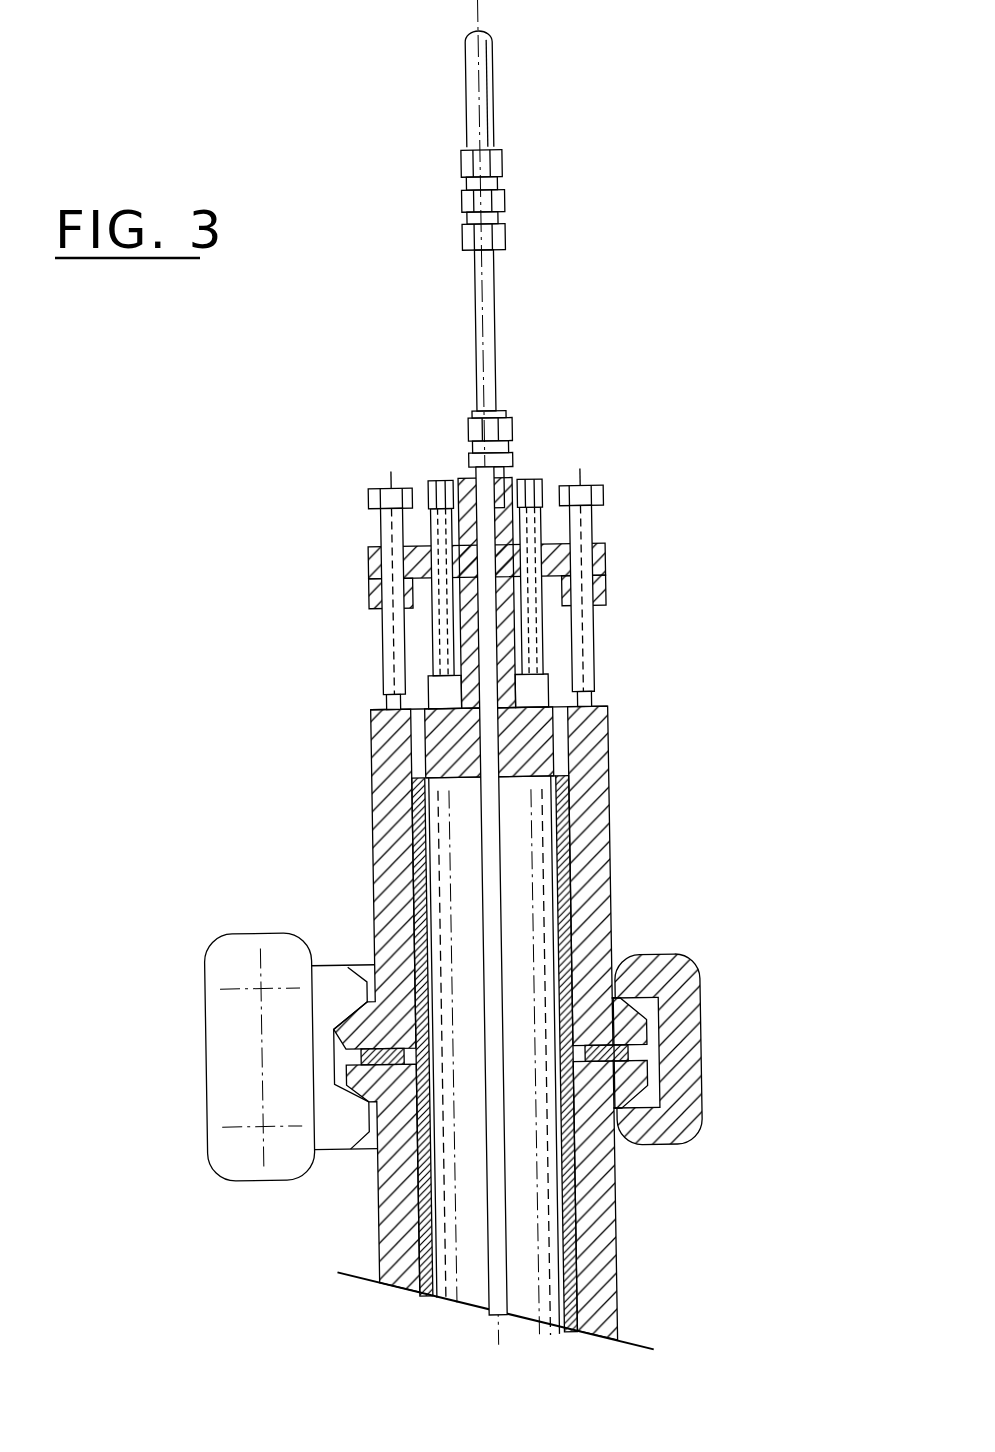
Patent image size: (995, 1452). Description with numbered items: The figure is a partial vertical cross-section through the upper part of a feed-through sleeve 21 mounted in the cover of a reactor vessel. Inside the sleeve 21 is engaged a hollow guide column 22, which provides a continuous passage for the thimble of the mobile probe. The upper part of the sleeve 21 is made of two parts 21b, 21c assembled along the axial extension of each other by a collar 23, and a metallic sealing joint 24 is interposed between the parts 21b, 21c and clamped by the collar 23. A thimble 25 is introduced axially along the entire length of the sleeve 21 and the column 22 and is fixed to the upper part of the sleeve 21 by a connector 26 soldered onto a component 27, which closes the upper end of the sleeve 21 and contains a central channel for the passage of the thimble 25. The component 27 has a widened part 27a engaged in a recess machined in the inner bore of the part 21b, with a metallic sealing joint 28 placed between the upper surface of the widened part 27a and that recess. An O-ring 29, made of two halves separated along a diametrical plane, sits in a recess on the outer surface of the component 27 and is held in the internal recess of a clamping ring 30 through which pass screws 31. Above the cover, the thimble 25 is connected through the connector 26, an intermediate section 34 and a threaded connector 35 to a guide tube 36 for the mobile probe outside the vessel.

The feed-through sleeve 21 is at (523, 948).
The upper sleeve part 21b is at (600, 792).
The lower sleeve part 21c is at (588, 1233).
The hollow guide column 22 is at (546, 940).
The collar 23 is at (662, 1047).
The metallic sealing joint 24 is at (612, 1028).
The thimble 25 is at (505, 895).
The connector 26 is at (522, 422).
The closing component 27 is at (525, 625).
The widened part 27a is at (560, 748).
The metallic sealing joint 28 is at (550, 722).
The O-ring 29 is at (552, 547).
The clamping ring 30 is at (362, 545).
The screws 31 is at (582, 566).
The intermediate section 34 is at (500, 352).
The threaded connector 35 is at (510, 184).
The guide tube 36 is at (489, 77).